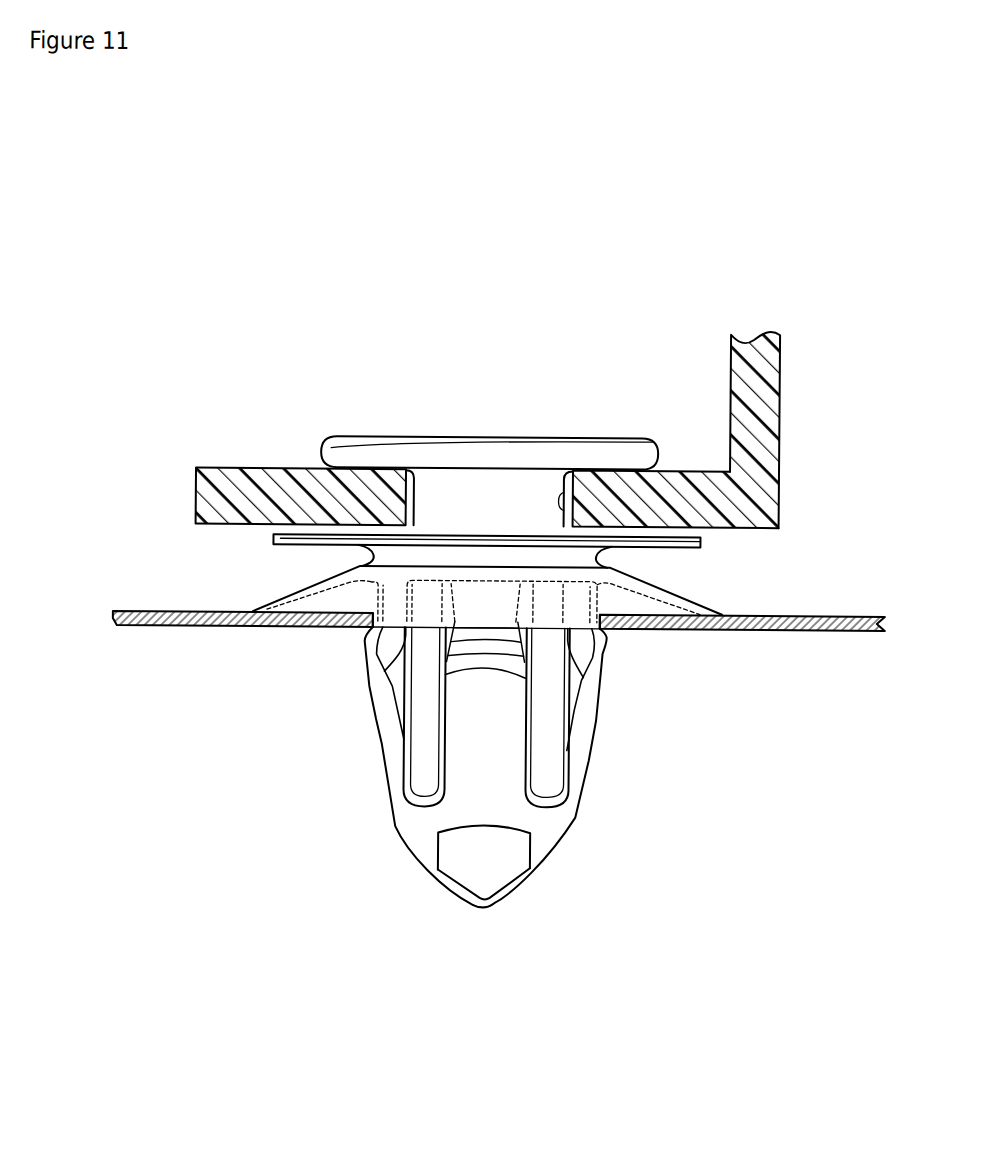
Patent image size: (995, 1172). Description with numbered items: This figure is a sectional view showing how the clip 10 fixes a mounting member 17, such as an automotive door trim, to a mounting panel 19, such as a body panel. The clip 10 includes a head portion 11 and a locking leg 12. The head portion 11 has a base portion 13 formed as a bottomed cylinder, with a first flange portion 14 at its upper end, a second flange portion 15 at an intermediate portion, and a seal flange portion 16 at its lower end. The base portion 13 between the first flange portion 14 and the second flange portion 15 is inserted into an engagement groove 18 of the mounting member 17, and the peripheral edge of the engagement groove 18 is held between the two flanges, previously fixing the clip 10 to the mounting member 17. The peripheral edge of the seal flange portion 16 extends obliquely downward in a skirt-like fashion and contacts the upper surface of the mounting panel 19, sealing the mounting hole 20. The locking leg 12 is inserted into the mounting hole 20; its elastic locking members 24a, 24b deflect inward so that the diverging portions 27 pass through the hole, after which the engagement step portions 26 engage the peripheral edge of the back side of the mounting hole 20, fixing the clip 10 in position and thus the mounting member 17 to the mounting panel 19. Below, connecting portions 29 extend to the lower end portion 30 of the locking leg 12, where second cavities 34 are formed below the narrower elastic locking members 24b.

The clip 10 is at (540, 378).
The head portion 11 is at (353, 427).
The locking leg 12 is at (602, 848).
The base portion 13 is at (548, 484).
The first flange portion 14 is at (318, 455).
The second flange portion 15 is at (294, 540).
The seal flange portion 16 is at (657, 584).
The mounting member 17 is at (792, 373).
The engagement groove 18 is at (578, 504).
The mounting panel 19 is at (822, 613).
The mounting hole 20 is at (626, 628).
The elastic locking members 24a is at (375, 732).
The elastic locking members 24b is at (470, 724).
The engagement step portions 26 is at (368, 635).
The diverging portions 27 is at (376, 671).
The connecting portions 29 is at (427, 848).
The lower end portion 30 is at (487, 911).
The second cavities 34 is at (485, 876).